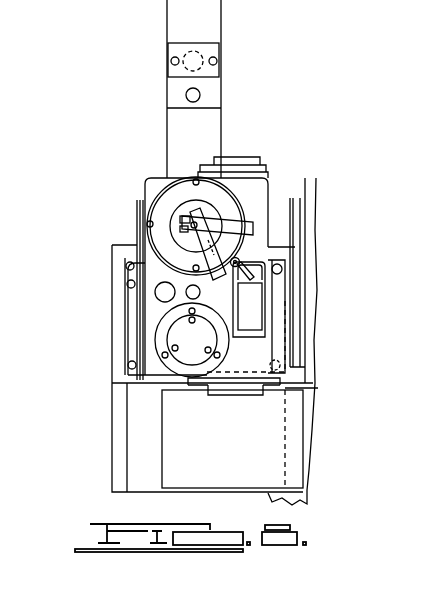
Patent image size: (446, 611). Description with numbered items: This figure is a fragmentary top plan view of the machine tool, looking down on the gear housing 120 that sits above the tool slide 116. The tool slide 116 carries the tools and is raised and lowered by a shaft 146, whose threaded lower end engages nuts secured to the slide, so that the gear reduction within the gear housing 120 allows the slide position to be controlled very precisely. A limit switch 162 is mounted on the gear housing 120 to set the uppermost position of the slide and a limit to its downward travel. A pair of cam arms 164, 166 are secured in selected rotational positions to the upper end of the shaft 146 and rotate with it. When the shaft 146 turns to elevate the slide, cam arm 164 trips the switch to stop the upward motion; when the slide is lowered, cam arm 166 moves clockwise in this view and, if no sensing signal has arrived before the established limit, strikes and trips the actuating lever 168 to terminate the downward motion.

The tool slide 116 is at (210, 128).
The gear housing 120 is at (156, 308).
The shaft 146 is at (181, 221).
The limit switch 162 is at (255, 300).
The cam arm 164 is at (195, 242).
The cam arm 166 is at (252, 222).
The actuating lever 168 is at (239, 259).